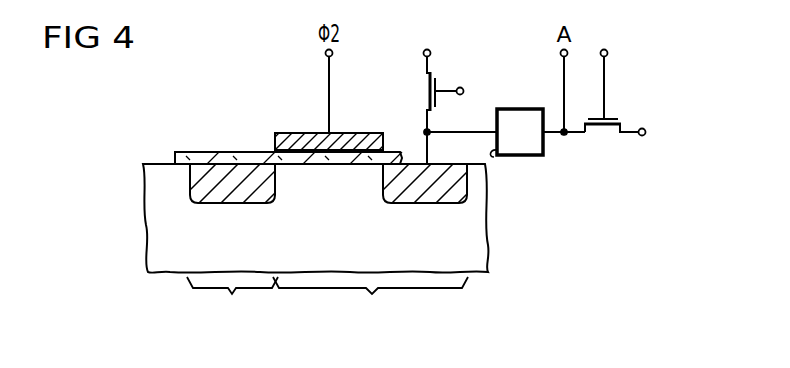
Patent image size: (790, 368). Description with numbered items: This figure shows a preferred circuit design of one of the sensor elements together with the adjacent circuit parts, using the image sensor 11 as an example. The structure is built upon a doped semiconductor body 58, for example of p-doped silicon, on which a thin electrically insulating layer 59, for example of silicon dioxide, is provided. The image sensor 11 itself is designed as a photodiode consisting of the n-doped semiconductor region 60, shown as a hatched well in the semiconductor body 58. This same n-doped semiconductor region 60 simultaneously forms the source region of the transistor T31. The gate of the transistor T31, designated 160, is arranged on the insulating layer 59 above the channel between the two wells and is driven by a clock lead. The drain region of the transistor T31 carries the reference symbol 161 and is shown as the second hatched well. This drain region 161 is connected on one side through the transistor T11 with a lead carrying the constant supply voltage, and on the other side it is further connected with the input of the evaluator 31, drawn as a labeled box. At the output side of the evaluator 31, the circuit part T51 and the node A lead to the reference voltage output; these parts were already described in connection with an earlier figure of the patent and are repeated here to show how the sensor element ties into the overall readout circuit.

The image sensor 11 is at (232, 303).
The evaluator 31 is at (533, 146).
The doped semiconductor body 58 is at (477, 230).
The thin electrically insulating layer 59 is at (228, 157).
The n-doped semiconductor region 60 is at (226, 200).
The gate of transistor T31 160 is at (297, 142).
The drain region of transistor T31 161 is at (425, 200).
The transistor T11 is at (440, 93).
The transistor T31 is at (370, 303).
The transistor T51 is at (635, 92).